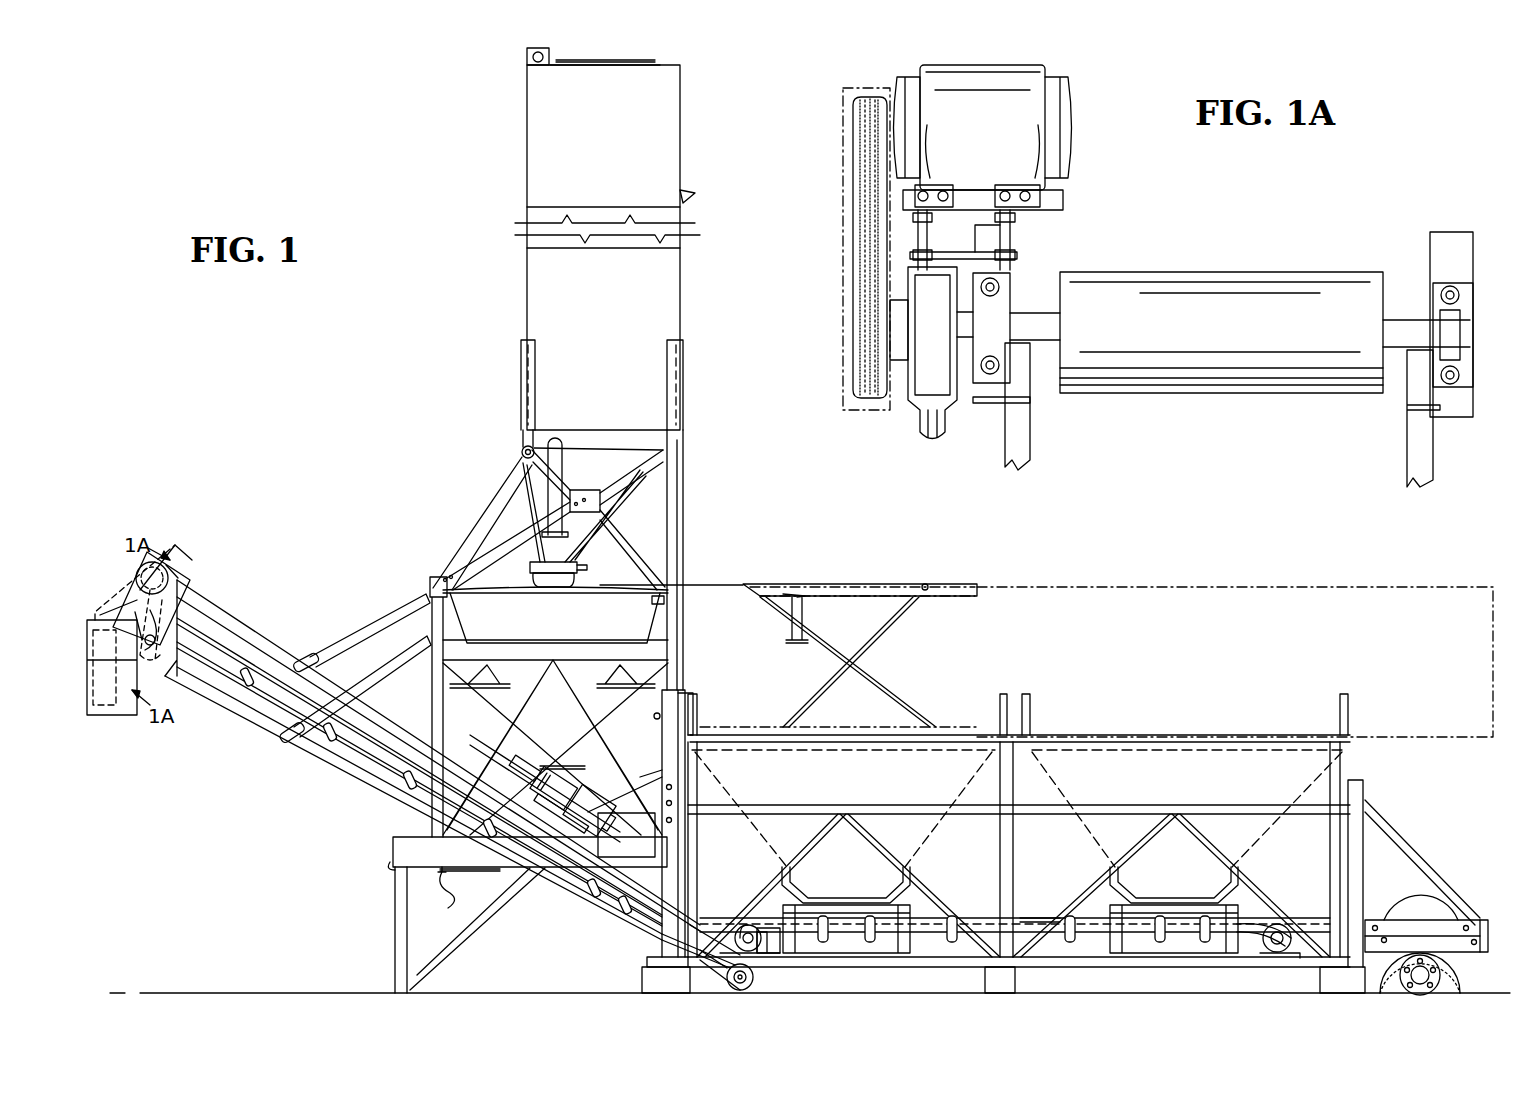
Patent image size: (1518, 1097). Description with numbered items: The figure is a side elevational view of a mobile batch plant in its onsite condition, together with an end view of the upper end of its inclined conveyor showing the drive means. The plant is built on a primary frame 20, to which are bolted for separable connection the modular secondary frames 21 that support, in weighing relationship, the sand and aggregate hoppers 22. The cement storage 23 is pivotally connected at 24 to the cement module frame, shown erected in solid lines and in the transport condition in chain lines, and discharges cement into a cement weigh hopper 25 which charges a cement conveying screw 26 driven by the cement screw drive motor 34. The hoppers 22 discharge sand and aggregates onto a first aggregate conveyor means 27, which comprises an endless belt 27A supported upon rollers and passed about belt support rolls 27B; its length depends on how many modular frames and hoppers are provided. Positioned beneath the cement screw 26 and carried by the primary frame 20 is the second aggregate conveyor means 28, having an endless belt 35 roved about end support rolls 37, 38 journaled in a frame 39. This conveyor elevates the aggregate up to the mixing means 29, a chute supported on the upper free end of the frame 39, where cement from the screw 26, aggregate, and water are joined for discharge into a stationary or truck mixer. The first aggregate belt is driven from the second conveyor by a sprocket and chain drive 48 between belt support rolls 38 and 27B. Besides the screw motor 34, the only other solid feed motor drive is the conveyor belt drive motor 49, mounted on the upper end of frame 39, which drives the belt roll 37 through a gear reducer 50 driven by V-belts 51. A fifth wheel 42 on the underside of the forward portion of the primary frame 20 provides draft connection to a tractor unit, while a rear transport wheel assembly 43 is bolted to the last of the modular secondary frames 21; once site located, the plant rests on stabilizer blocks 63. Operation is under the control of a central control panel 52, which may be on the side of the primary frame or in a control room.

In FIG. 1, the primary frame 20 is at (390, 845).
In FIG. 1, the modular secondary frames 21 is at (760, 805).
In FIG. 1, the sand and aggregate hoppers 22 is at (860, 870).
In FIG. 1, the cement storage 23 is at (616, 290).
In FIG. 1, the pivotal connection 24 is at (654, 716).
In FIG. 1, the cement weigh hopper 25 is at (559, 619).
In FIG. 1, the cement conveying screw 26 is at (485, 745).
In FIG. 1, the first aggregate conveyor means 27 is at (985, 910).
In FIG. 1, the endless belt 27A is at (1042, 918).
In FIG. 1, the belt support rolls 27B is at (818, 928).
In FIG. 1, the second aggregate conveyor means 28 is at (272, 682).
In FIG. 1, the mixing means 29 is at (112, 725).
In FIG. 1, the cement screw drive motor 34 is at (605, 777).
In FIG. 1, the endless belt 35 is at (357, 742).
In FIG. 1A, the end support roll 37 is at (1234, 340).
In FIG. 1, the end support roll 38 is at (778, 940).
In FIG. 1A, the frame 39 is at (1022, 400).
In FIG. 1, the fifth wheel 42 is at (448, 908).
In FIG. 1, the rear transport wheel assembly 43 is at (1368, 858).
In FIG. 1, the sprocket and chain drive 48 is at (752, 970).
In FIG. 1, the conveyor belt drive motor 49 is at (170, 572).
In FIG. 1A, the conveyor belt drive motor 49 is at (990, 136).
In FIG. 1A, the gear reducer 50 is at (947, 351).
In FIG. 1, the V-belts 51 is at (168, 610).
In FIG. 1A, the V-belts 51 is at (865, 240).
In FIG. 1, the central control panel 52 is at (637, 847).
In FIG. 1, the stabilizer blocks 63 is at (642, 975).